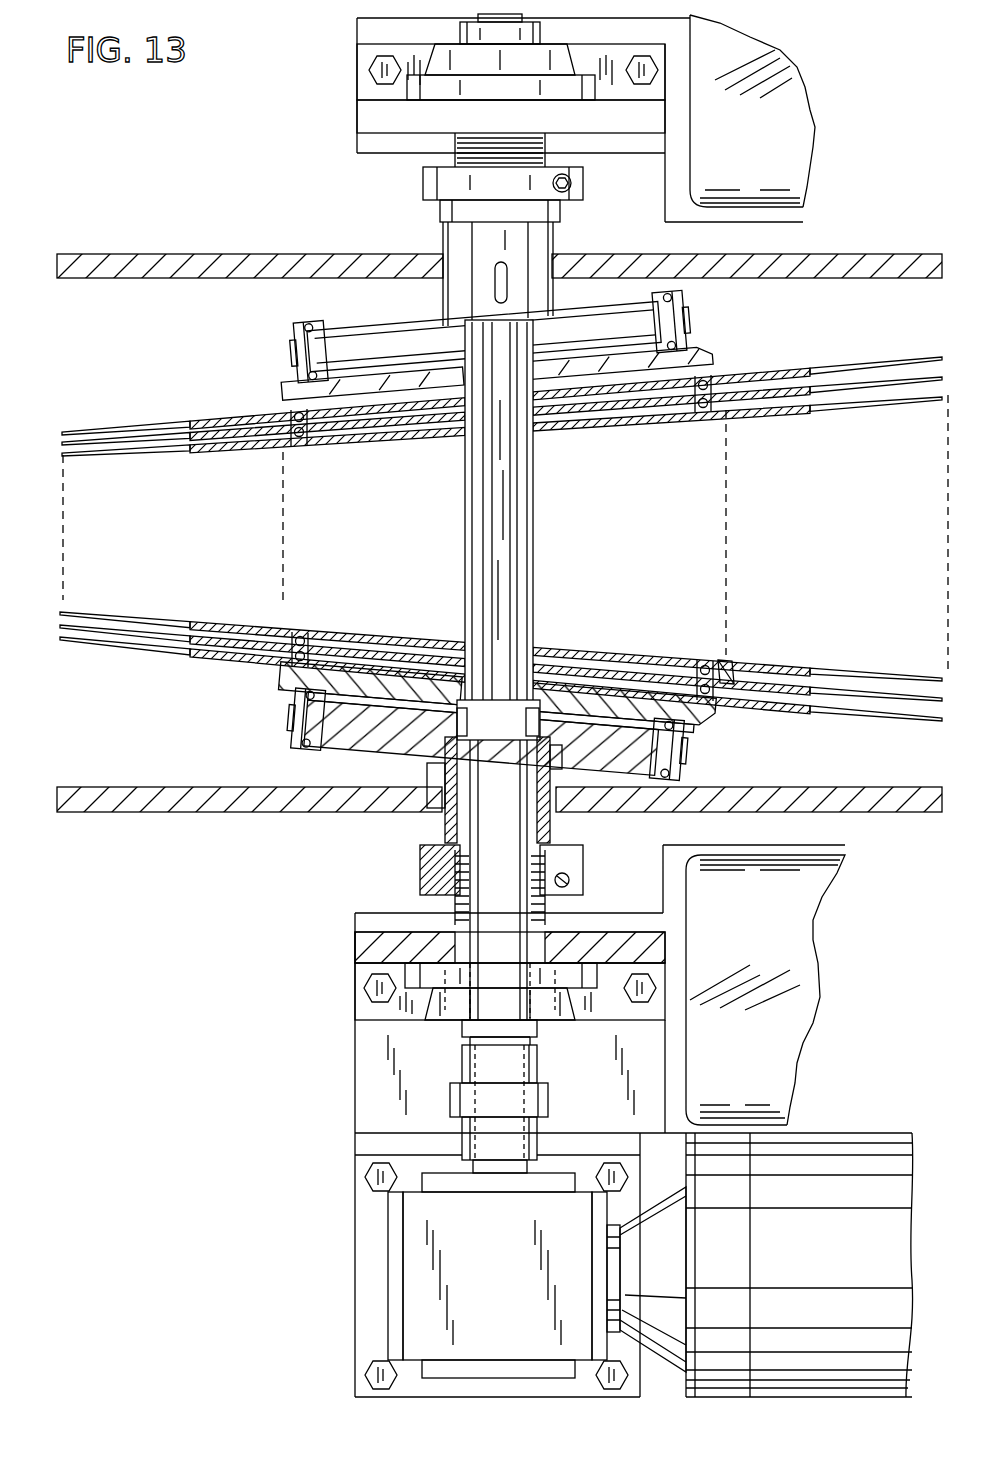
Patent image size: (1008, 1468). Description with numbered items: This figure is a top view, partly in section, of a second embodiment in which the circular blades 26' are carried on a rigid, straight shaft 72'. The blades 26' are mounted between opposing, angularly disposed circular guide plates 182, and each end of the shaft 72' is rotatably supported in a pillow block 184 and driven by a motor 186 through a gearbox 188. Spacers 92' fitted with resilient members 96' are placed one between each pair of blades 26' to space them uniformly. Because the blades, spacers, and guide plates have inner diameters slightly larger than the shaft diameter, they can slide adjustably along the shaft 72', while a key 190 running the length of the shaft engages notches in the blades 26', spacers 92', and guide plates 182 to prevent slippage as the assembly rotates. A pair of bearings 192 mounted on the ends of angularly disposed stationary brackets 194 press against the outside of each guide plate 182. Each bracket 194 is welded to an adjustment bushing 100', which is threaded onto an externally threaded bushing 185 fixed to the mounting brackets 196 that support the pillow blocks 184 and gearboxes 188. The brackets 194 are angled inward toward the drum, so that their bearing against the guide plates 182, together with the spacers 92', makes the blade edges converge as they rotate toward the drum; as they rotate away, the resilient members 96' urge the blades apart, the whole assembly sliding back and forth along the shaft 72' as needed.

The pillow block 184 is at (364, 89).
The mounting bracket 196 is at (364, 120).
The externally threaded bushing 185 is at (455, 158).
The adjustment bushing 100' is at (527, 517).
The stationary bracket 194 is at (352, 330).
The circular guide plate 182 is at (707, 360).
The resilient member 96' is at (506, 538).
The circular blade 26' is at (501, 539).
The key 190 is at (507, 540).
The spacer 92' is at (784, 654).
The shaft 72' is at (525, 771).
The bearing 192 is at (313, 743).
The motor 186 is at (860, 1132).
The gearbox 188 is at (518, 1284).